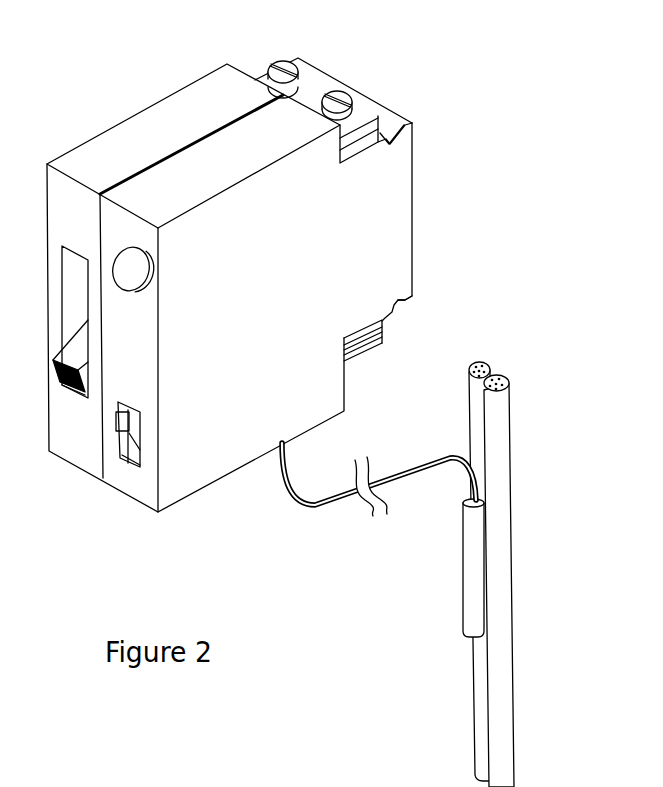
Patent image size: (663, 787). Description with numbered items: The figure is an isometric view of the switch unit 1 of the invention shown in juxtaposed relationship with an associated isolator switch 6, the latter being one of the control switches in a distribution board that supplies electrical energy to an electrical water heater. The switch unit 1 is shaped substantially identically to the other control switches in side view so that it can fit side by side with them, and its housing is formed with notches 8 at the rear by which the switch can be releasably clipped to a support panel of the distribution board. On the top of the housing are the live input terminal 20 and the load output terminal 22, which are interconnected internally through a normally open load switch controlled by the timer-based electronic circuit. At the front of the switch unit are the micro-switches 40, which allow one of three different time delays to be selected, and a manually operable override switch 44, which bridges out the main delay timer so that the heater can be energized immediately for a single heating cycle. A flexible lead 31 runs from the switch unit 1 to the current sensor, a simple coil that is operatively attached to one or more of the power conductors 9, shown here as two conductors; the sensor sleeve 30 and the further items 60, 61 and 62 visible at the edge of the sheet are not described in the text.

The switch unit 1 is at (188, 468).
The isolator switch 6 is at (134, 140).
The notches 8 is at (395, 136).
The power conductors 9 is at (502, 697).
The live input terminal 20 is at (310, 70).
The load output terminal 22 is at (380, 338).
The sleeve 30 is at (473, 565).
The flexible lead 31 is at (322, 513).
The micro-switches 40 is at (120, 443).
The manually operable override switch 44 is at (128, 272).
The element 60 is at (66, 777).
The element 61 is at (226, 776).
The element 62 is at (359, 770).